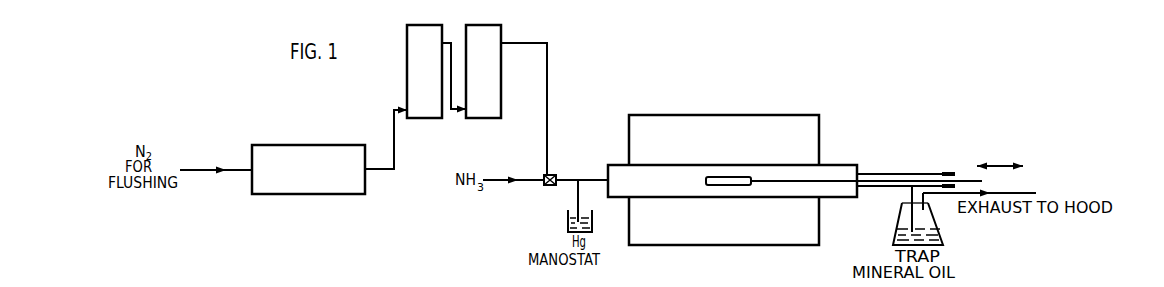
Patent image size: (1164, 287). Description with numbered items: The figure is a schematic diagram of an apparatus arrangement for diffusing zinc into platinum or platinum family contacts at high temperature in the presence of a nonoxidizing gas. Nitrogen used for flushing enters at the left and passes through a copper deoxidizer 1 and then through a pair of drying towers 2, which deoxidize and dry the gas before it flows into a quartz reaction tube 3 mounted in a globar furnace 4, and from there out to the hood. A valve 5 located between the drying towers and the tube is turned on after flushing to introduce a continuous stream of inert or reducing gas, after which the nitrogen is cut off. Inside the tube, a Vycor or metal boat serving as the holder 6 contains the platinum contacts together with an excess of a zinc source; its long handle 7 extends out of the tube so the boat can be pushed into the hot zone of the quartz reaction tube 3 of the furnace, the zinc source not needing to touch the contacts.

The copper deoxidizer 1 is at (308, 153).
The drying towers 2 is at (471, 31).
The quartz reaction tube 3 is at (617, 171).
The globar furnace 4 is at (650, 121).
The valve 5 is at (548, 187).
The holder 6 is at (721, 177).
The long handle 7 is at (967, 174).